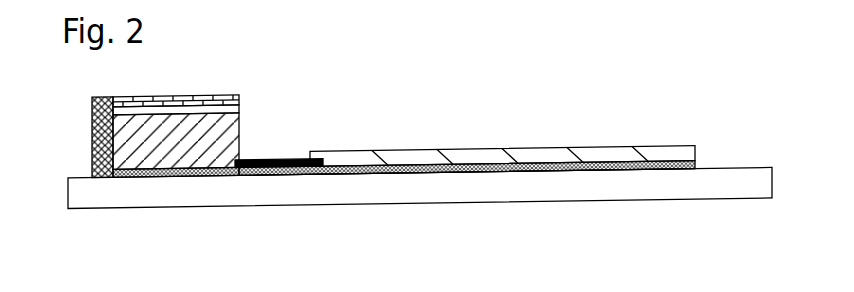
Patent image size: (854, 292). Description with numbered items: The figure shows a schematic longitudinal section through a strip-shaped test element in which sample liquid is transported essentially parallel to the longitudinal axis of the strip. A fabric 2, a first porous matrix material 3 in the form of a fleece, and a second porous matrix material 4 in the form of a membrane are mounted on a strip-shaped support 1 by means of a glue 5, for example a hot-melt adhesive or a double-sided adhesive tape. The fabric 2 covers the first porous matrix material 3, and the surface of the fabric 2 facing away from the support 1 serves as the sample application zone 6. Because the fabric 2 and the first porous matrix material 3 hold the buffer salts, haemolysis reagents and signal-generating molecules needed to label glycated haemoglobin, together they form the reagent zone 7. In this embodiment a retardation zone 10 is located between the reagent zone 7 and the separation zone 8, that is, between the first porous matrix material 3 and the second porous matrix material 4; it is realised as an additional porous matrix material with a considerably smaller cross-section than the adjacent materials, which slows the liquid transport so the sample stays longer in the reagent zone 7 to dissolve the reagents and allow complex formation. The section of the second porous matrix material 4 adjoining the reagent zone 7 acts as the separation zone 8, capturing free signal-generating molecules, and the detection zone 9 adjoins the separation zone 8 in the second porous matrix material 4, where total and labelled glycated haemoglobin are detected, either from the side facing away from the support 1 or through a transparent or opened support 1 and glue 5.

The support 1 is at (155, 188).
The fabric 2 is at (238, 100).
The first porous matrix material (fleece) 3 is at (142, 178).
The second porous matrix material (membrane) 4 is at (328, 175).
The glue 5 is at (407, 177).
The sample application zone 6 is at (238, 88).
The reagent zone 7 is at (78, 98).
The separation zone 8 is at (520, 133).
The detection zone 9 is at (545, 130).
The retardation zone 10 is at (283, 155).